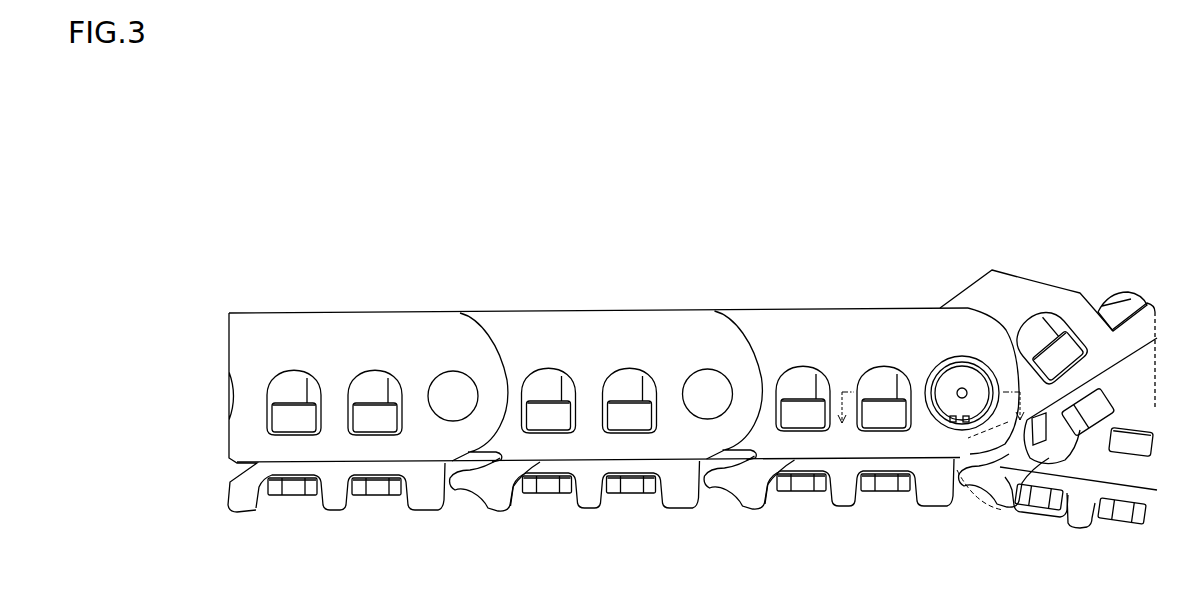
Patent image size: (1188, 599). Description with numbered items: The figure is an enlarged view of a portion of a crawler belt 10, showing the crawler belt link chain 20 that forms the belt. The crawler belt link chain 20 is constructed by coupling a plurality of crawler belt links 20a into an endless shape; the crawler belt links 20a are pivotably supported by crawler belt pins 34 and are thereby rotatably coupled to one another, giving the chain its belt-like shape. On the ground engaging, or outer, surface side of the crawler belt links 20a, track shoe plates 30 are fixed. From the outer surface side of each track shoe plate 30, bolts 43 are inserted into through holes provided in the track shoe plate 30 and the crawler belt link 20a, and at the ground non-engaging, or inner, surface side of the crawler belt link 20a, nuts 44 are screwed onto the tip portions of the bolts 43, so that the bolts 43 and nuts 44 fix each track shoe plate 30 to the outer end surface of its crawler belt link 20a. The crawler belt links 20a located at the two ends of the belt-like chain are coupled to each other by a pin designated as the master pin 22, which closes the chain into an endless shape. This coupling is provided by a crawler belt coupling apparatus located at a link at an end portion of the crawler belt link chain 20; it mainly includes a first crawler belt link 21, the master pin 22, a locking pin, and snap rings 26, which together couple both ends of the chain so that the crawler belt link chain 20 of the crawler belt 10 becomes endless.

The crawler belt 10 is at (1062, 234).
The crawler belt link chain 20 is at (746, 237).
The crawler belt link 20a is at (606, 294).
The first crawler belt link 21 is at (872, 445).
The master pin 22 is at (972, 398).
The snap ring 26 is at (956, 430).
The track shoe plate 30 is at (832, 468).
The crawler belt pin 34 is at (708, 396).
The bolt 43 is at (910, 487).
The nut 44 is at (887, 417).